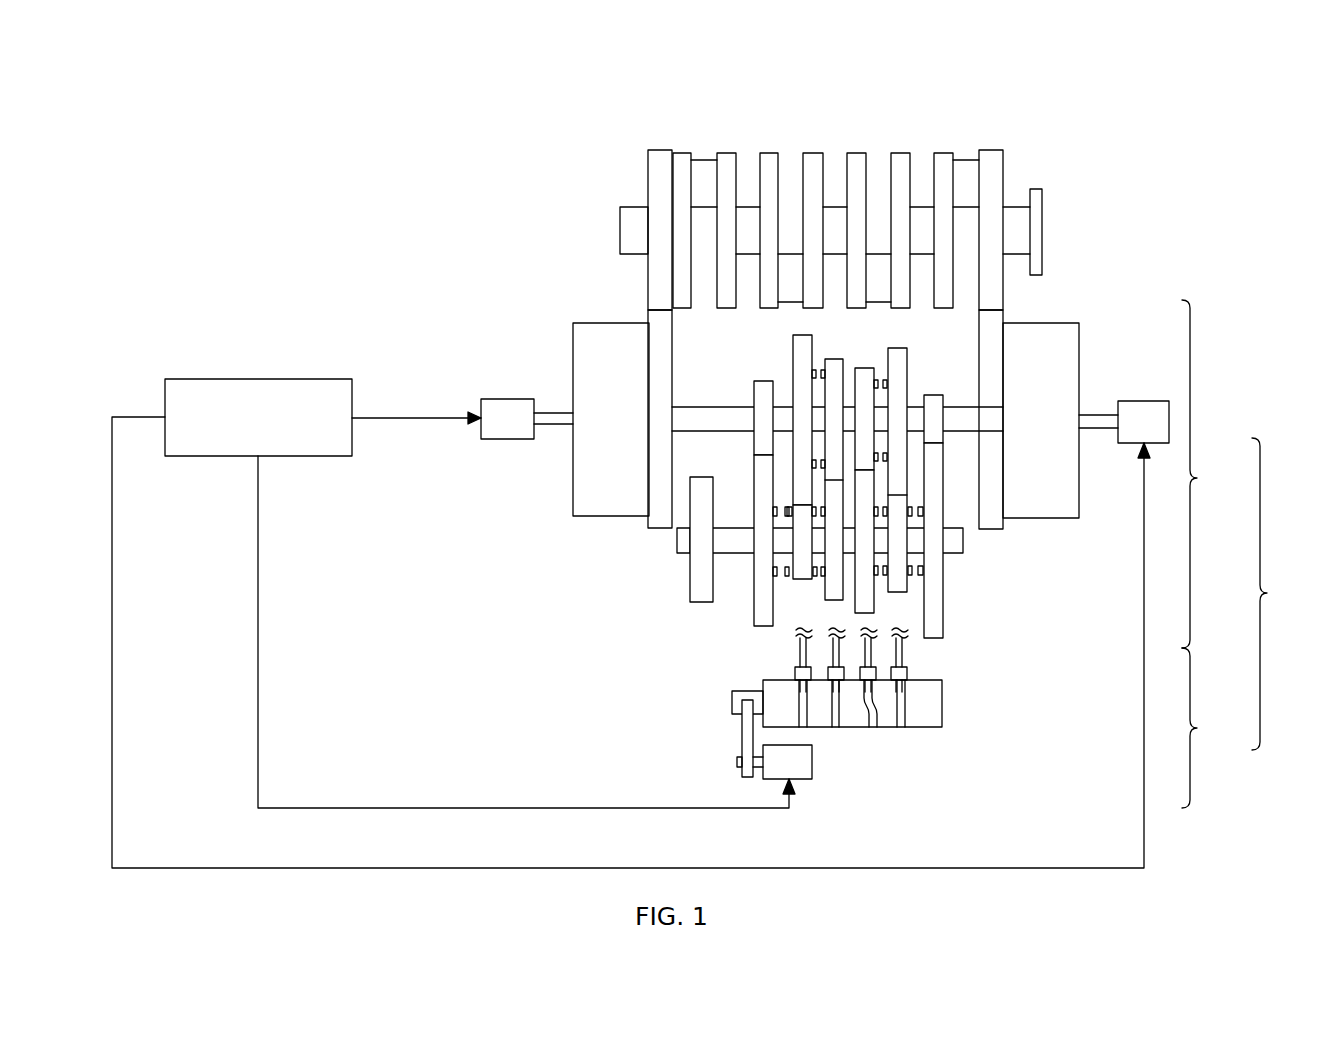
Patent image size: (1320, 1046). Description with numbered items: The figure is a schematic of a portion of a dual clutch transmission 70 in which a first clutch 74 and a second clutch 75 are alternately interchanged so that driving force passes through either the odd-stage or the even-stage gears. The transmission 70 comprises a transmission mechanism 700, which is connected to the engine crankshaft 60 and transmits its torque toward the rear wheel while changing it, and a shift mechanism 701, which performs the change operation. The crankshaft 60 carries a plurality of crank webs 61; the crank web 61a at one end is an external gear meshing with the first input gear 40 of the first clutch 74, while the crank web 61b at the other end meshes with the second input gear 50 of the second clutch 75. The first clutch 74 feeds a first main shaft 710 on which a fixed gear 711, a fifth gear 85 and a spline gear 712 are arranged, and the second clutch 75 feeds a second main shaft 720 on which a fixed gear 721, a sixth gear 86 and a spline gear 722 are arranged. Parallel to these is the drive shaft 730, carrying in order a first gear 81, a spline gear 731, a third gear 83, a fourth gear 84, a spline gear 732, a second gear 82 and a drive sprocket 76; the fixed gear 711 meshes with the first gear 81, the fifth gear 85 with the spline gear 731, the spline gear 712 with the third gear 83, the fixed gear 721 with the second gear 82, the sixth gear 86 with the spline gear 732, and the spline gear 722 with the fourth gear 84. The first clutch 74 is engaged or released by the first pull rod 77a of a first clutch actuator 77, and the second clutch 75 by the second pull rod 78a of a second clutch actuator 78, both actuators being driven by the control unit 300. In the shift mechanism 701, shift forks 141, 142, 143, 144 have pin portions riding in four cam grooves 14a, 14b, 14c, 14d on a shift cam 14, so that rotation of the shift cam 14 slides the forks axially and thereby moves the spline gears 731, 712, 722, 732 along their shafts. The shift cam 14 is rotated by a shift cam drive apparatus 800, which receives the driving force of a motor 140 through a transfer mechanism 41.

The shift cam 14 is at (920, 720).
The cam groove 14a is at (900, 722).
The cam groove 14b is at (873, 720).
The cam groove 14c is at (836, 720).
The cam groove 14d is at (804, 720).
The first input gear 40 is at (992, 503).
The transfer mechanism 41 is at (748, 738).
The second input gear 50 is at (660, 485).
The crankshaft 60 is at (627, 232).
The crank webs 61 is at (725, 162).
The crank web 61a is at (992, 162).
The crank web 61b is at (657, 167).
The dual clutch transmission 70 is at (1280, 594).
The first clutch 74 is at (1080, 335).
The second clutch 75 is at (573, 323).
The drive sprocket 76 is at (700, 586).
The first clutch actuator 77 is at (1143, 401).
The first pull rod 77a is at (1098, 414).
The second clutch actuator 78 is at (512, 398).
The second pull rod 78a is at (548, 412).
The first gear 81 is at (935, 607).
The second gear 82 is at (760, 483).
The third gear 83 is at (865, 543).
The fourth gear 84 is at (810, 580).
The fifth gear 85 is at (933, 403).
The sixth gear 86 is at (793, 350).
The motor 140 is at (768, 775).
The shift fork 141 is at (905, 657).
The shift fork 142 is at (868, 652).
The shift fork 143 is at (802, 652).
The shift fork 144 is at (800, 657).
The control unit 300 is at (265, 378).
The transmission mechanism 700 is at (1218, 474).
The shift mechanism 701 is at (1216, 728).
The first main shaft 710 is at (958, 417).
The fixed gear 711 is at (1003, 410).
The spline gear 712 is at (862, 372).
The second main shaft 720 is at (683, 418).
The fixed gear 721 is at (758, 392).
The spline gear 722 is at (832, 365).
The drive shaft 730 is at (680, 542).
The spline gear 731 is at (898, 570).
The spline gear 732 is at (800, 542).
The shift cam drive apparatus 800 is at (735, 698).